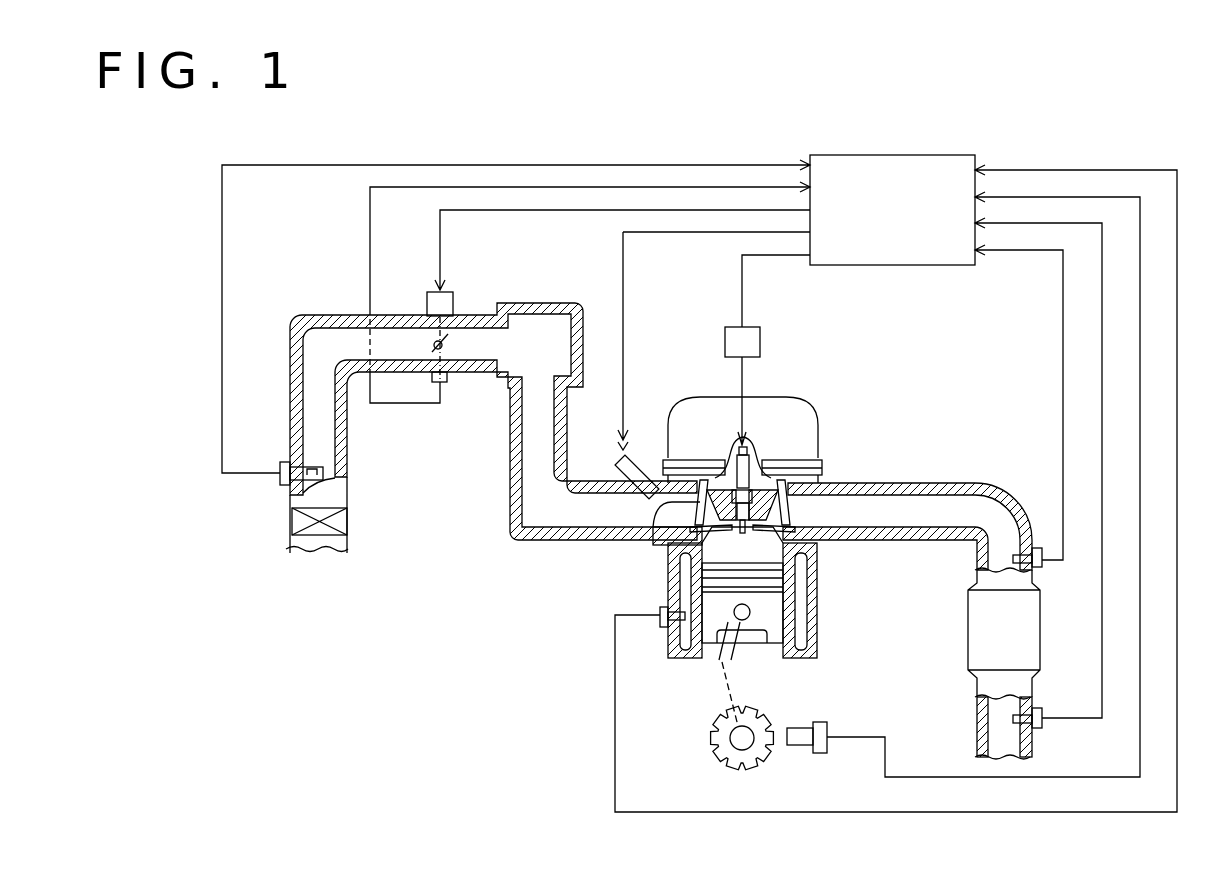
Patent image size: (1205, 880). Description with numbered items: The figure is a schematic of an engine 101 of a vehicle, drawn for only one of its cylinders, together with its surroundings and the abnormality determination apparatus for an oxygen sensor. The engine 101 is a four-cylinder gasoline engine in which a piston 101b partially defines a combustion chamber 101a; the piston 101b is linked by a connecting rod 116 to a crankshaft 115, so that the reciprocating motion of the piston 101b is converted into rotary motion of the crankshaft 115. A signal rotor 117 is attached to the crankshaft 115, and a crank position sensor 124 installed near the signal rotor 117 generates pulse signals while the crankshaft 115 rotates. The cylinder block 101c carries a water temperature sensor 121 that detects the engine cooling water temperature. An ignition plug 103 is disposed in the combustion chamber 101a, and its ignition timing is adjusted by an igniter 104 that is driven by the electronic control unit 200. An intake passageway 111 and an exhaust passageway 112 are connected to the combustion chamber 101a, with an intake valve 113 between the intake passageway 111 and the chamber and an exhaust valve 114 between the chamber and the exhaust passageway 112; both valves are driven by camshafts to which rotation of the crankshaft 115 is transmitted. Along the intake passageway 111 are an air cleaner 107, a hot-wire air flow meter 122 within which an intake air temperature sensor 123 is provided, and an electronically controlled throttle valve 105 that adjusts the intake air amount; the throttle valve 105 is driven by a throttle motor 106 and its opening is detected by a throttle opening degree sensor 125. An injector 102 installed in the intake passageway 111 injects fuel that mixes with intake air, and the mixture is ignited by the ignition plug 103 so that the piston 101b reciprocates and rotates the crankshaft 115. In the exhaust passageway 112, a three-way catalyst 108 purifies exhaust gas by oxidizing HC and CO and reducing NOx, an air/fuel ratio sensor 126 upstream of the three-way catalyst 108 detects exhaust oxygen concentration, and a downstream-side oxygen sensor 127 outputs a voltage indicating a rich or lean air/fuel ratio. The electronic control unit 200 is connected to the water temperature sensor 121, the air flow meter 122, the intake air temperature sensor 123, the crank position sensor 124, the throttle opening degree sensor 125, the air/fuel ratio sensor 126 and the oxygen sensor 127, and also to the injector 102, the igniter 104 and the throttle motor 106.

The electronic control unit (ECU) 200 is at (912, 153).
The engine 101 is at (833, 440).
The combustion chamber 101a is at (782, 553).
The piston 101b is at (772, 633).
The cylinder block 101c is at (703, 658).
The injector 102 is at (620, 468).
The ignition plug 103 is at (752, 462).
The igniter 104 is at (762, 343).
The throttle valve 105 is at (433, 347).
The throttle motor 106 is at (453, 303).
The air cleaner 107 is at (343, 521).
The three-way catalyst 108 is at (967, 645).
The intake passageway 111 is at (595, 513).
The exhaust passageway 112 is at (877, 510).
The intake valve 113 is at (650, 527).
The exhaust valve 114 is at (784, 523).
The crankshaft 115 is at (730, 740).
The connecting rod 116 is at (718, 668).
The signal rotor 117 is at (725, 768).
The water temperature sensor 121 is at (663, 605).
The air flow meter 122 is at (285, 462).
The intake air temperature sensor 123 is at (320, 466).
The crank position sensor 124 is at (805, 728).
The throttle opening degree sensor 125 is at (448, 383).
The air/fuel ratio sensor 126 is at (1043, 547).
The oxygen sensor 127 is at (1043, 710).